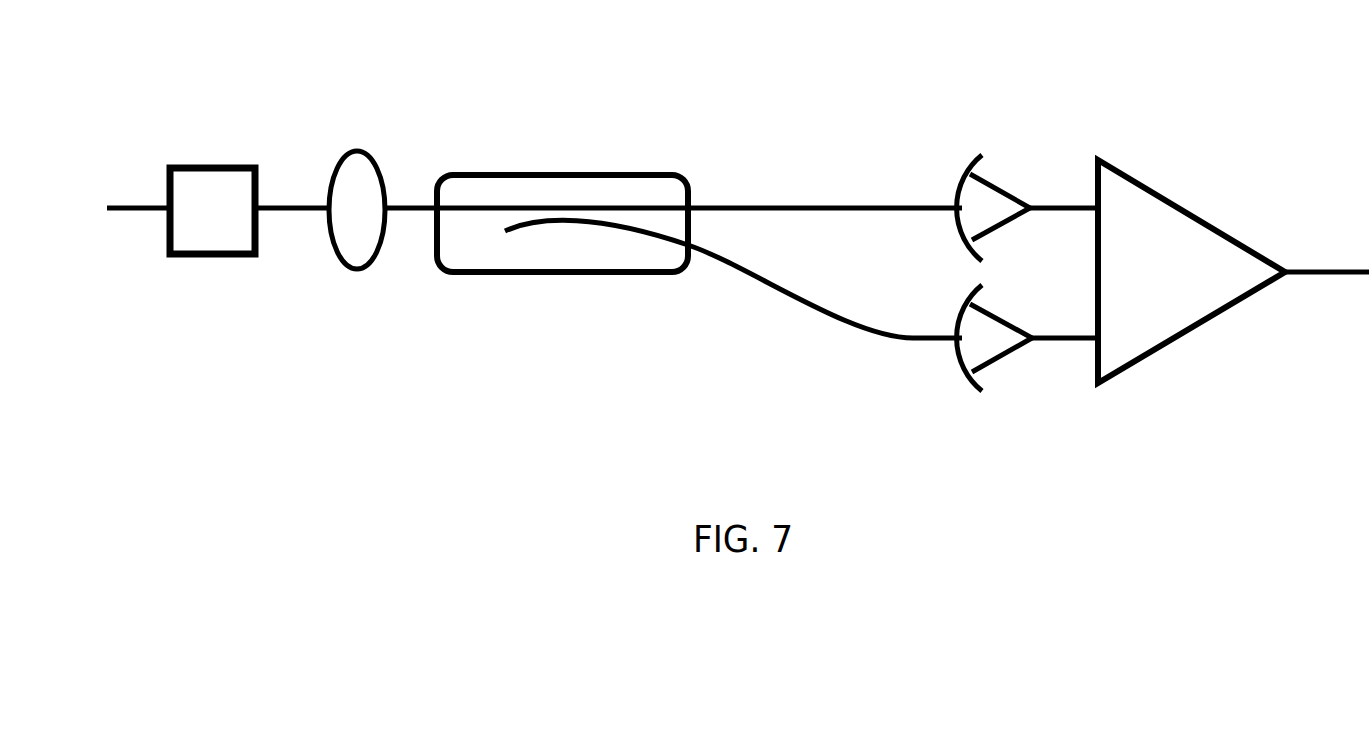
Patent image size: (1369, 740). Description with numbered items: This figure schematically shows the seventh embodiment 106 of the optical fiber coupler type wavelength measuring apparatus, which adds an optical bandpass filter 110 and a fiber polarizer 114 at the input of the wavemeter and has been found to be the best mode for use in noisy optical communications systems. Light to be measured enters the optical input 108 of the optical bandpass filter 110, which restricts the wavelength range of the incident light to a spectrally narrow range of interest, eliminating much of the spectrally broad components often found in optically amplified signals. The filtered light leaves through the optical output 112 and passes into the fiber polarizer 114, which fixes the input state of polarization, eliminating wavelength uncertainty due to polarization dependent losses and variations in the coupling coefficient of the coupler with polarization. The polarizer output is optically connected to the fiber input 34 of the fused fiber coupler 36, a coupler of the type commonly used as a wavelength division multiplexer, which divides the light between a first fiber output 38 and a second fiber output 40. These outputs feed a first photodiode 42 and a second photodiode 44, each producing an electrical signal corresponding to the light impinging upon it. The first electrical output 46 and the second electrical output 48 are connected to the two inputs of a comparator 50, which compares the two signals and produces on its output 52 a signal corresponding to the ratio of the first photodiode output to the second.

The seventh embodiment 106 is at (755, 85).
The optical input 108 is at (118, 207).
The optical bandpass filter 110 is at (198, 208).
The optical output 112 is at (273, 207).
The fiber polarizer 114 is at (353, 190).
The fiber input 34 is at (412, 205).
The fused fiber coupler 36 is at (517, 195).
The first fiber output 38 is at (788, 203).
The second fiber output 40 is at (808, 303).
The first photodiode 42 is at (990, 207).
The second photodiode 44 is at (985, 340).
The electrical output 46 is at (1062, 203).
The electrical output 48 is at (1058, 343).
The comparator 50 is at (1143, 257).
The output 52 is at (1337, 268).